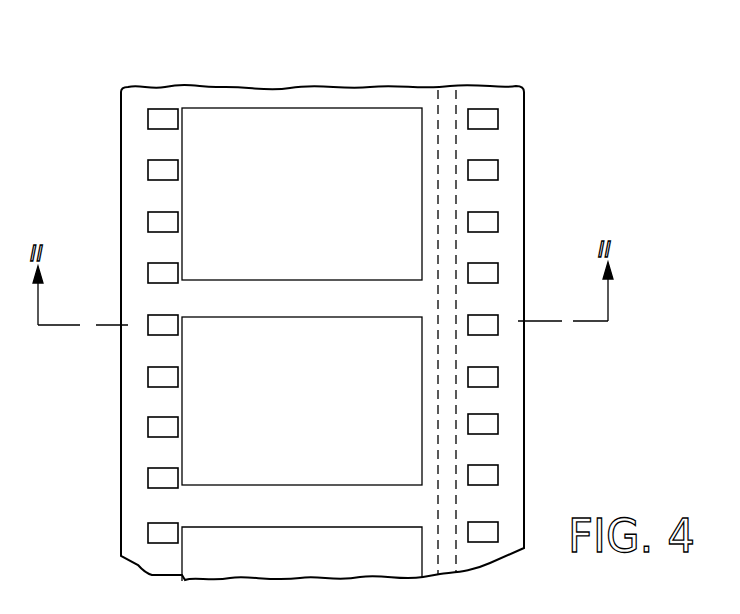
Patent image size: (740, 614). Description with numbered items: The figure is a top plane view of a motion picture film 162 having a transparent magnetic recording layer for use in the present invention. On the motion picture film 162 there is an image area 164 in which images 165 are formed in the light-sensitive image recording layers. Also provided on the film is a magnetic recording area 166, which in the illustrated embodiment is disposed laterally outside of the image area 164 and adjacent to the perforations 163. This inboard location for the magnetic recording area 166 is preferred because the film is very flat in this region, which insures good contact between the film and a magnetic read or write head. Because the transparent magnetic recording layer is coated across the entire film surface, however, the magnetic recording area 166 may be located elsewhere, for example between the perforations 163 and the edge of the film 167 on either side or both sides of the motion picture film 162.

The motion picture film 162 is at (553, 133).
The perforations 163 is at (498, 423).
The image area 164 is at (421, 72).
The images 165 is at (338, 202).
The magnetic recording area 166 is at (431, 73).
The edge of the film 167 is at (121, 481).